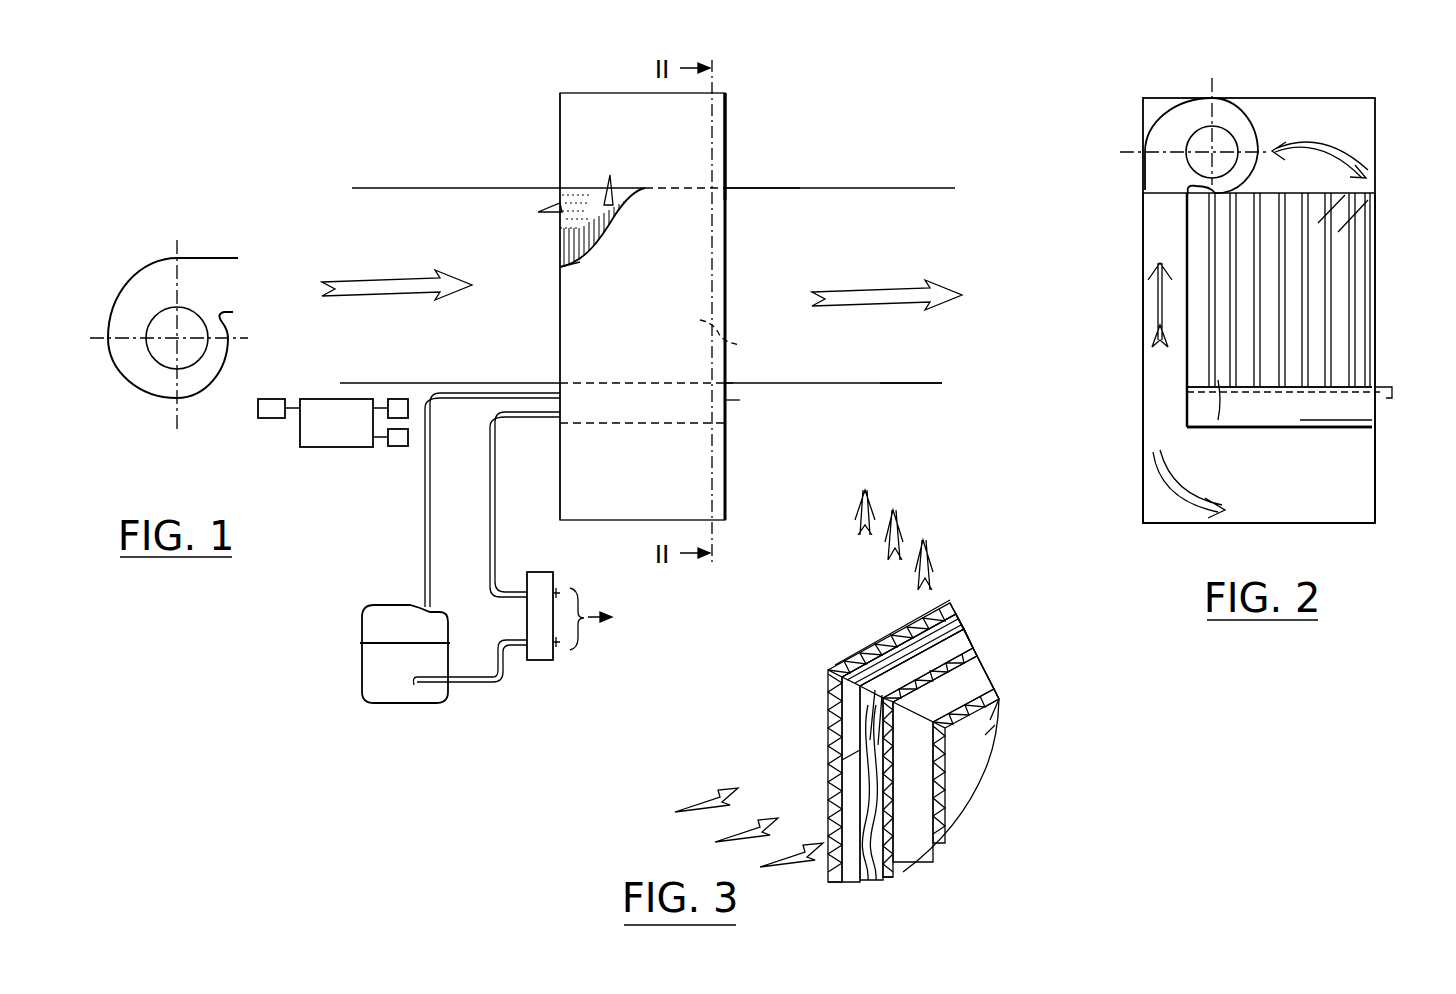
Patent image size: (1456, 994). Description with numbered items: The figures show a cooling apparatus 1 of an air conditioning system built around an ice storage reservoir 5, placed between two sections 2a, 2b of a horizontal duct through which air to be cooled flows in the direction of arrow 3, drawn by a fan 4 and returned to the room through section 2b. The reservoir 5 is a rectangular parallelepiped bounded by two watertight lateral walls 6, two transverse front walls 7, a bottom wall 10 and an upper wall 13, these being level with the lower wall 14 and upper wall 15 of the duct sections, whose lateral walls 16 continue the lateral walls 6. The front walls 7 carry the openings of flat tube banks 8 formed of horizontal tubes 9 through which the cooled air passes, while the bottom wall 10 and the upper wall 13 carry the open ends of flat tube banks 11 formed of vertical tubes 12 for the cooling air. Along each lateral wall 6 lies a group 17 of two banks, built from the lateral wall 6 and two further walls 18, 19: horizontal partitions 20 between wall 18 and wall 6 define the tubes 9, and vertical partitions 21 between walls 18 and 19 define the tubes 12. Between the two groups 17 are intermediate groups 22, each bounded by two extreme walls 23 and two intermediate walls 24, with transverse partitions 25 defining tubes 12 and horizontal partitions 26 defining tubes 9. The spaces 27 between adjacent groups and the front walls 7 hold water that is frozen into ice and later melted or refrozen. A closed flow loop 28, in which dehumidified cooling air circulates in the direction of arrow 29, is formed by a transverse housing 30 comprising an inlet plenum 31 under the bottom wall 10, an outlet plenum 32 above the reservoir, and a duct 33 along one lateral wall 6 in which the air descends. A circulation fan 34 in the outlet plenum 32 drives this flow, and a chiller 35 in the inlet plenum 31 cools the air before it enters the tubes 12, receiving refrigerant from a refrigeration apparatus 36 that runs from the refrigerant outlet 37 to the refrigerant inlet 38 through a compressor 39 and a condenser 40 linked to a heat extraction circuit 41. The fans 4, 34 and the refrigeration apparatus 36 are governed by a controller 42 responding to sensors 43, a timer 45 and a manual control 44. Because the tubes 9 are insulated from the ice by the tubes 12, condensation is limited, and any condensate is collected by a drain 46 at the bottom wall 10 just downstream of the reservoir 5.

In FIG. 1, the cooling apparatus 1 is at (530, 100).
In FIG. 2, the cooling apparatus 1 is at (1112, 86).
In FIG. 1, the duct section 2a is at (425, 186).
In FIG. 1, the duct section 2b is at (840, 186).
In FIG. 1, the arrow 3 is at (385, 278).
In FIG. 3, the arrow 3 is at (700, 798).
In FIG. 1, the fan 4 is at (197, 378).
In FIG. 1, the ice storage reservoir 5 is at (737, 338).
In FIG. 2, the ice storage reservoir 5 is at (1372, 312).
In FIG. 3, the ice storage reservoir 5 is at (826, 726).
In FIG. 2, the lateral wall 6 is at (1185, 242).
In FIG. 3, the lateral wall 6 is at (828, 806).
In FIG. 1, the front wall 7 is at (555, 332).
In FIG. 3, the front wall 7 is at (888, 877).
In FIG. 1, the flat tube bank 8 is at (570, 185).
In FIG. 3, the flat tube bank 8 is at (835, 882).
In FIG. 1, the tube 9 is at (533, 213).
In FIG. 3, the tube 9 is at (888, 812).
In FIG. 1, the bottom wall 10 is at (647, 405).
In FIG. 2, the bottom wall 10 is at (1330, 400).
In FIG. 1, the flat tube bank 11 is at (560, 250).
In FIG. 3, the flat tube bank 11 is at (982, 640).
In FIG. 1, the tube 12 is at (610, 175).
In FIG. 3, the tube 12 is at (995, 690).
In FIG. 1, the upper wall 13 is at (615, 192).
In FIG. 2, the upper wall 13 is at (1270, 193).
In FIG. 3, the upper wall 13 is at (962, 615).
In FIG. 1, the lower wall 14 is at (810, 390).
In FIG. 1, the upper wall 15 is at (748, 186).
In FIG. 1, the lateral wall 16 is at (885, 362).
In FIG. 2, the group 17 is at (1372, 365).
In FIG. 3, the group 17 is at (998, 708).
In FIG. 3, the wall 18 is at (985, 725).
In FIG. 3, the wall 19 is at (900, 725).
In FIG. 3, the partition 20 is at (975, 800).
In FIG. 3, the partition 21 is at (1050, 765).
In FIG. 2, the group 22 is at (1225, 380).
In FIG. 3, the group 22 is at (995, 668).
In FIG. 3, the extreme wall 23 is at (848, 752).
In FIG. 3, the intermediate wall 24 is at (995, 655).
In FIG. 3, the partition 25 is at (920, 660).
In FIG. 3, the partition 26 is at (885, 770).
In FIG. 2, the space 27 is at (1370, 192).
In FIG. 3, the space 27 is at (870, 646).
In FIG. 2, the closed flow loop 28 is at (1365, 512).
In FIG. 2, the arrow 29 is at (1172, 520).
In FIG. 3, the arrow 29 is at (850, 525).
In FIG. 1, the transverse housing 30 is at (727, 104).
In FIG. 2, the transverse housing 30 is at (1140, 485).
In FIG. 2, the inlet plenum 31 is at (1368, 486).
In FIG. 2, the outlet plenum 32 is at (1358, 126).
In FIG. 2, the duct 33 is at (1143, 372).
In FIG. 2, the circulation fan 34 is at (1228, 116).
In FIG. 1, the chiller 35 is at (725, 405).
In FIG. 2, the chiller 35 is at (1345, 420).
In FIG. 1, the refrigeration apparatus 36 is at (410, 548).
In FIG. 1, the refrigerant outlet 37 is at (550, 388).
In FIG. 1, the refrigerant inlet 38 is at (548, 415).
In FIG. 1, the compressor 39 is at (385, 617).
In FIG. 1, the condenser 40 is at (560, 567).
In FIG. 1, the circuit 41 is at (609, 619).
In FIG. 1, the controller 42 is at (295, 438).
In FIG. 1, the sensor 43 is at (400, 398).
In FIG. 1, the manual control 44 is at (398, 445).
In FIG. 1, the timer 45 is at (272, 398).
In FIG. 1, the drain 46 is at (733, 383).
In FIG. 2, the drain 46 is at (1395, 392).